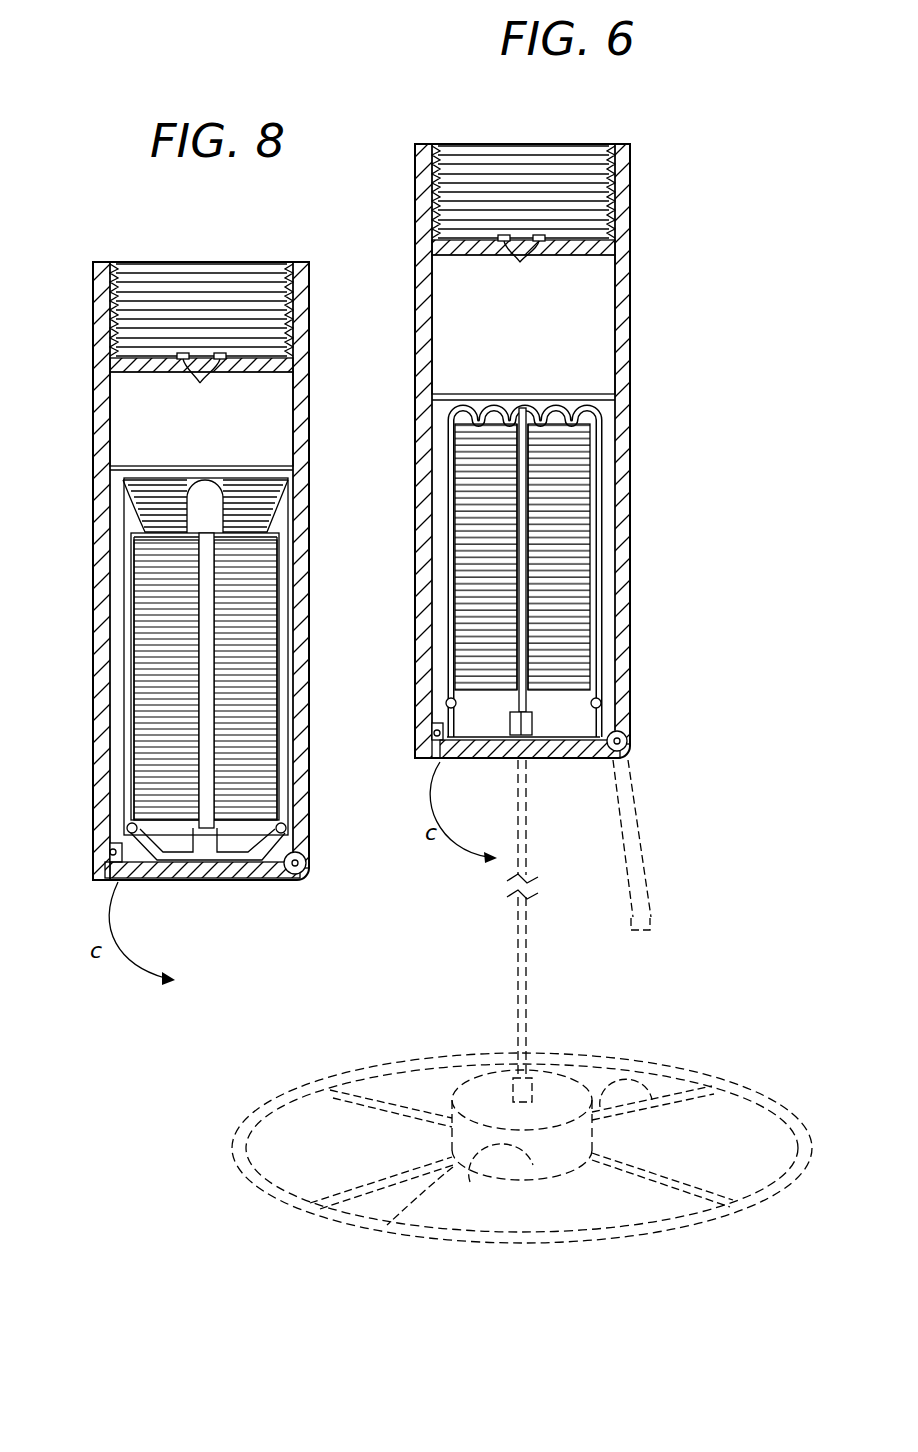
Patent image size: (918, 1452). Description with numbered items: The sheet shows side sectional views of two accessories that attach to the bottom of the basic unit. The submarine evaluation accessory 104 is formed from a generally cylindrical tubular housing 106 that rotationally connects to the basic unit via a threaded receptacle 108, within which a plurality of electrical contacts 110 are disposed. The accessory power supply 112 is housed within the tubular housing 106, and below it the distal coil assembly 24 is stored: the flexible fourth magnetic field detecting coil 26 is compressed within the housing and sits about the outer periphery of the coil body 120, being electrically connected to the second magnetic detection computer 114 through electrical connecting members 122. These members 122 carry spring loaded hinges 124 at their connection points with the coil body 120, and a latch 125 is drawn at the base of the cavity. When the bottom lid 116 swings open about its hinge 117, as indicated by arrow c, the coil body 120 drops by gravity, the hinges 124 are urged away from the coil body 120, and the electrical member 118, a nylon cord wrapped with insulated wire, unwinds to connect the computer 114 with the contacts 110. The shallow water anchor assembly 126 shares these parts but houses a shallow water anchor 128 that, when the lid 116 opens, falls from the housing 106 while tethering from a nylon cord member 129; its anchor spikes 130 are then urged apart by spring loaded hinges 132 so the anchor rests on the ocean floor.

In FIG. 6, the distal coil assembly 24 is at (764, 1047).
In FIG. 6, the fourth magnetic field detecting coil 26 is at (553, 408).
In FIG. 6, the submarine evaluation accessory 104 is at (706, 398).
In FIG. 6, the tubular housing 106 is at (620, 283).
In FIG. 8, the tubular housing 106 is at (302, 520).
In FIG. 6, the threaded receptacle 108 is at (553, 145).
In FIG. 8, the threaded receptacle 108 is at (197, 262).
In FIG. 6, the electrical contacts 110 is at (521, 265).
In FIG. 8, the electrical contacts 110 is at (201, 383).
In FIG. 6, the accessory power supply 112 is at (448, 300).
In FIG. 8, the accessory power supply 112 is at (278, 408).
In FIG. 6, the second magnetic detection computer 114 is at (556, 720).
In FIG. 6, the bottom lid 116 is at (490, 762).
In FIG. 8, the bottom lid 116 is at (170, 878).
In FIG. 6, the hinge 117 is at (624, 748).
In FIG. 8, the hinge 117 is at (302, 873).
In FIG. 6, the electrical member 118 is at (550, 522).
In FIG. 6, the coil body 120 is at (402, 1107).
In FIG. 6, the electrical connecting members 122 is at (598, 598).
In FIG. 6, the spring loaded hinges 124 is at (601, 700).
In FIG. 6, the latch 125 is at (450, 703).
In FIG. 6, the shallow water anchor assembly 126 is at (348, 1082).
In FIG. 8, the shallow water anchor assembly 126 is at (330, 443).
In FIG. 8, the shallow water anchor 128 is at (204, 690).
In FIG. 8, the member 129 is at (262, 600).
In FIG. 8, the anchor spikes 130 is at (200, 501).
In FIG. 8, the spring loaded hinges 132 is at (129, 825).